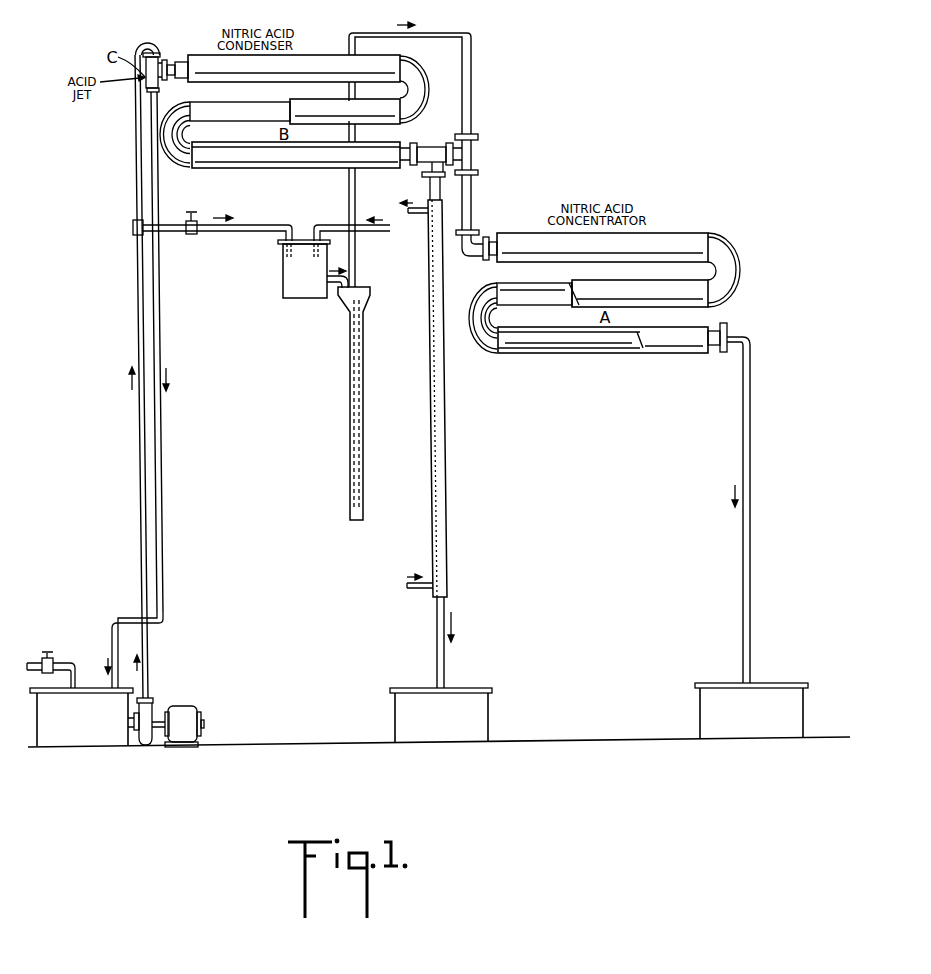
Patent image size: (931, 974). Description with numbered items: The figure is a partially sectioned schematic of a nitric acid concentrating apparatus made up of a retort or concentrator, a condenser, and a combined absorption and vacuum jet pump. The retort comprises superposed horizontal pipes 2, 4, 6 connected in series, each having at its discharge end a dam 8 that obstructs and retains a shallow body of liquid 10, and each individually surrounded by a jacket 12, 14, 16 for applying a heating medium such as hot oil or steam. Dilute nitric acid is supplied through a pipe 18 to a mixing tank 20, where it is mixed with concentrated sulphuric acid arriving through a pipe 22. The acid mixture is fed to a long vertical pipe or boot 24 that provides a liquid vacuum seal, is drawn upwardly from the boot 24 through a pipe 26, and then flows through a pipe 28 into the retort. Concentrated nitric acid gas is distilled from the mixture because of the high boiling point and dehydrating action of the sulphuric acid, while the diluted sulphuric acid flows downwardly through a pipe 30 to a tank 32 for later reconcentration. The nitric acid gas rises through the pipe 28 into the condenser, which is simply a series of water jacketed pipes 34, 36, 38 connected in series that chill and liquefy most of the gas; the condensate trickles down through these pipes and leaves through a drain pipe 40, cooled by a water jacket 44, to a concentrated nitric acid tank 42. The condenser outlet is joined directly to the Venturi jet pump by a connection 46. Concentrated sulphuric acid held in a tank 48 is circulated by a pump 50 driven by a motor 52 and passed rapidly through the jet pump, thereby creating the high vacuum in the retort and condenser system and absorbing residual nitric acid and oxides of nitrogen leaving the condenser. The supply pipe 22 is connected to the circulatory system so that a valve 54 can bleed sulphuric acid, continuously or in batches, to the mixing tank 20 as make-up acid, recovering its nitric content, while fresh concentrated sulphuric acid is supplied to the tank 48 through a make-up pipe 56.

The horizontal pipe 2 is at (491, 258).
The horizontal pipe 4 is at (539, 283).
The horizontal pipe 6 is at (540, 353).
The dam 8 is at (492, 297).
The shallow body of liquid 10 is at (574, 287).
The jacket 12 is at (665, 240).
The jacket 14 is at (662, 285).
The jacket 16 is at (667, 353).
The pipe 18 is at (330, 222).
The mixing tank 20 is at (305, 292).
The pipe 22 is at (262, 223).
The boot 24 is at (366, 398).
The pipe 26 is at (356, 195).
The pipe 28 is at (478, 192).
The pipe 30 is at (743, 434).
The tank 32 is at (718, 702).
The water jacketed pipe 34 is at (320, 55).
The water jacketed pipe 36 is at (313, 101).
The water jacketed pipe 38 is at (322, 146).
The drain pipe 40 is at (428, 185).
The concentrated nitric acid tank 42 is at (478, 707).
The jacket 44 is at (446, 506).
The connection 46 is at (165, 53).
The tank 48 is at (83, 735).
The pump 50 is at (151, 706).
The motor 52 is at (190, 708).
The valve 54 is at (193, 212).
The make-up pipe 56 is at (58, 667).